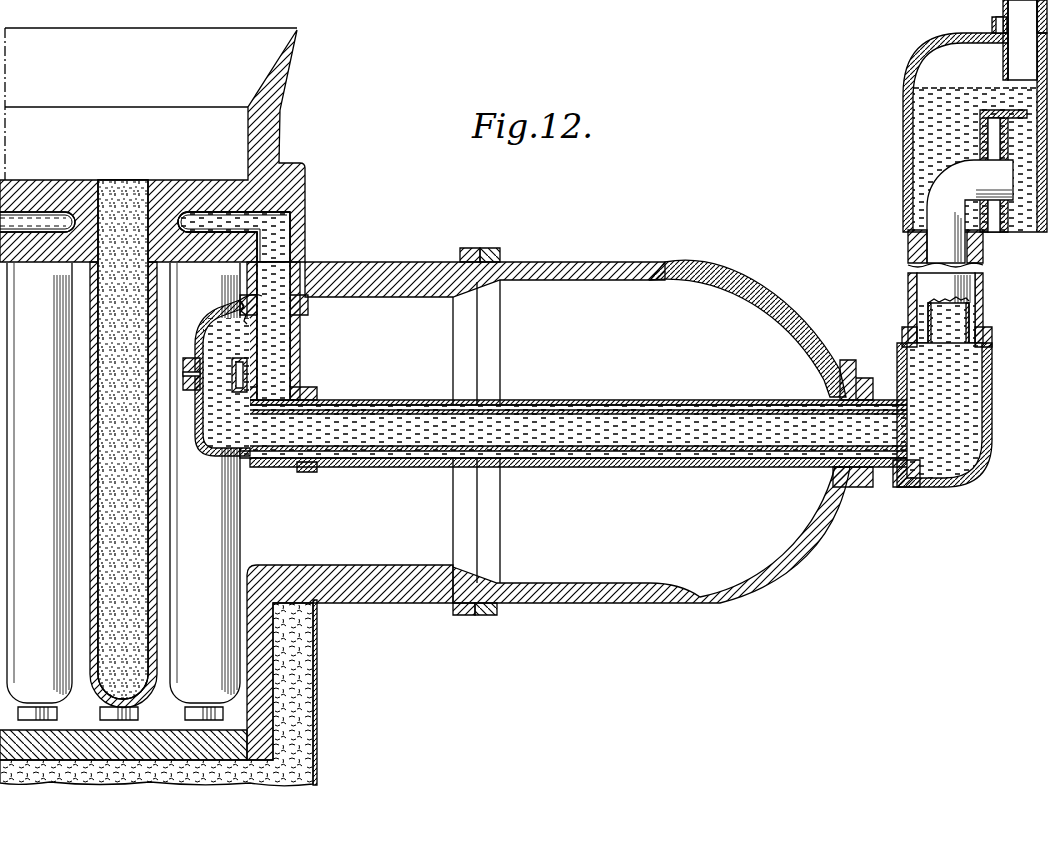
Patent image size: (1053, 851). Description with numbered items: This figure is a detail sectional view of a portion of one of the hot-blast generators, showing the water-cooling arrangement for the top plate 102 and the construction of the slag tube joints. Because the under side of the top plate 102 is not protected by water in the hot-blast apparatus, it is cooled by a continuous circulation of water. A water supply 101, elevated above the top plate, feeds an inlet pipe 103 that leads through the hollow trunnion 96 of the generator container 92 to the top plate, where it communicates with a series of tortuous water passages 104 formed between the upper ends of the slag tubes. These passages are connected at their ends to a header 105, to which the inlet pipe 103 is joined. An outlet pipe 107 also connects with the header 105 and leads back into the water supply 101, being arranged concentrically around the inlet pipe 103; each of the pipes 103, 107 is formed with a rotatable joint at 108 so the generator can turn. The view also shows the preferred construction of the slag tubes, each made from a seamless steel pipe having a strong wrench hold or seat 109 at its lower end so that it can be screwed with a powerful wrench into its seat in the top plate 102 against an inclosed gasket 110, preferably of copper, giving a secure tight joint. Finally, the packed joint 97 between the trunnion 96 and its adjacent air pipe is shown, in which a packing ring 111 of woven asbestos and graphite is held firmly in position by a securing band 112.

The generator container 92 is at (680, 263).
The hollow trunnion 96 is at (367, 267).
The packed joint 97 is at (475, 262).
The water supply 101 is at (1027, 218).
The top plate 102 is at (188, 196).
The inlet pipe 103 is at (243, 330).
The tortuous water passages 104 is at (38, 213).
The header 105 is at (301, 236).
The outlet pipe 107 is at (388, 400).
The rotatable joint 108 is at (890, 478).
The wrench hold or seat 109 is at (197, 712).
The gasket 110 is at (90, 216).
The packing ring 111 is at (472, 616).
The securing band 112 is at (490, 616).